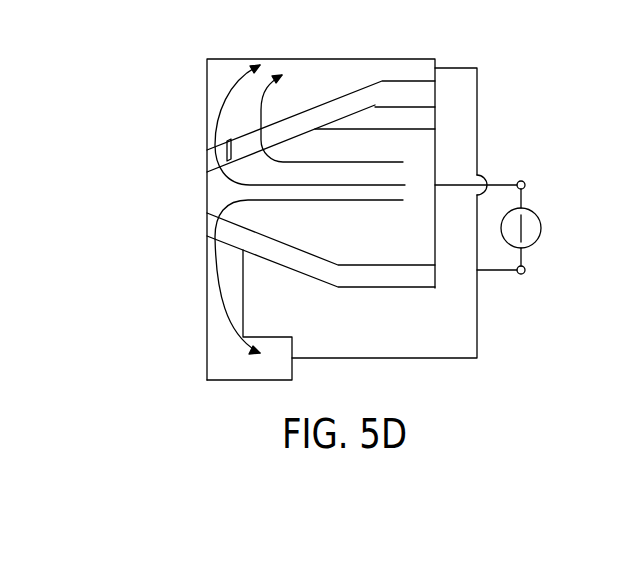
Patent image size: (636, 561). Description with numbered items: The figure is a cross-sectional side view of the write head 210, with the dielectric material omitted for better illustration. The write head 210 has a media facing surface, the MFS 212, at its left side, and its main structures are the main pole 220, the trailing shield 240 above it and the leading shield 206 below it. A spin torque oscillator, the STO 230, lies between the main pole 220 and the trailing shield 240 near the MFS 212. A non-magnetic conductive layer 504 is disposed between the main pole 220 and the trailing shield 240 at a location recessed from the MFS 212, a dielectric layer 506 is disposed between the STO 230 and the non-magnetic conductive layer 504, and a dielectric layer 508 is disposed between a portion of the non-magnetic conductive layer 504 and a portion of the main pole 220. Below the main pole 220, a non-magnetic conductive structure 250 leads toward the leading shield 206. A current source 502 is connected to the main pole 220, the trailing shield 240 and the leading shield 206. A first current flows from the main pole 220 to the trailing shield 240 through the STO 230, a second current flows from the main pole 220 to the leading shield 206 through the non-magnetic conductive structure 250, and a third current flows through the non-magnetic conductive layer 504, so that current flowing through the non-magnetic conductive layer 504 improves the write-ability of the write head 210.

The write head 210 is at (165, 52).
The MFS 212 is at (207, 86).
The leading shield 206 is at (223, 352).
The non-magnetic conductive layer 504 is at (427, 90).
The dielectric layer 508 is at (425, 117).
The STO 230 is at (218, 165).
The dielectric layer 506 is at (227, 142).
The main pole 220 is at (220, 198).
The trailing shield 240 is at (327, 77).
The non-magnetic conductive structure 250 is at (230, 235).
The current source 502 is at (537, 213).